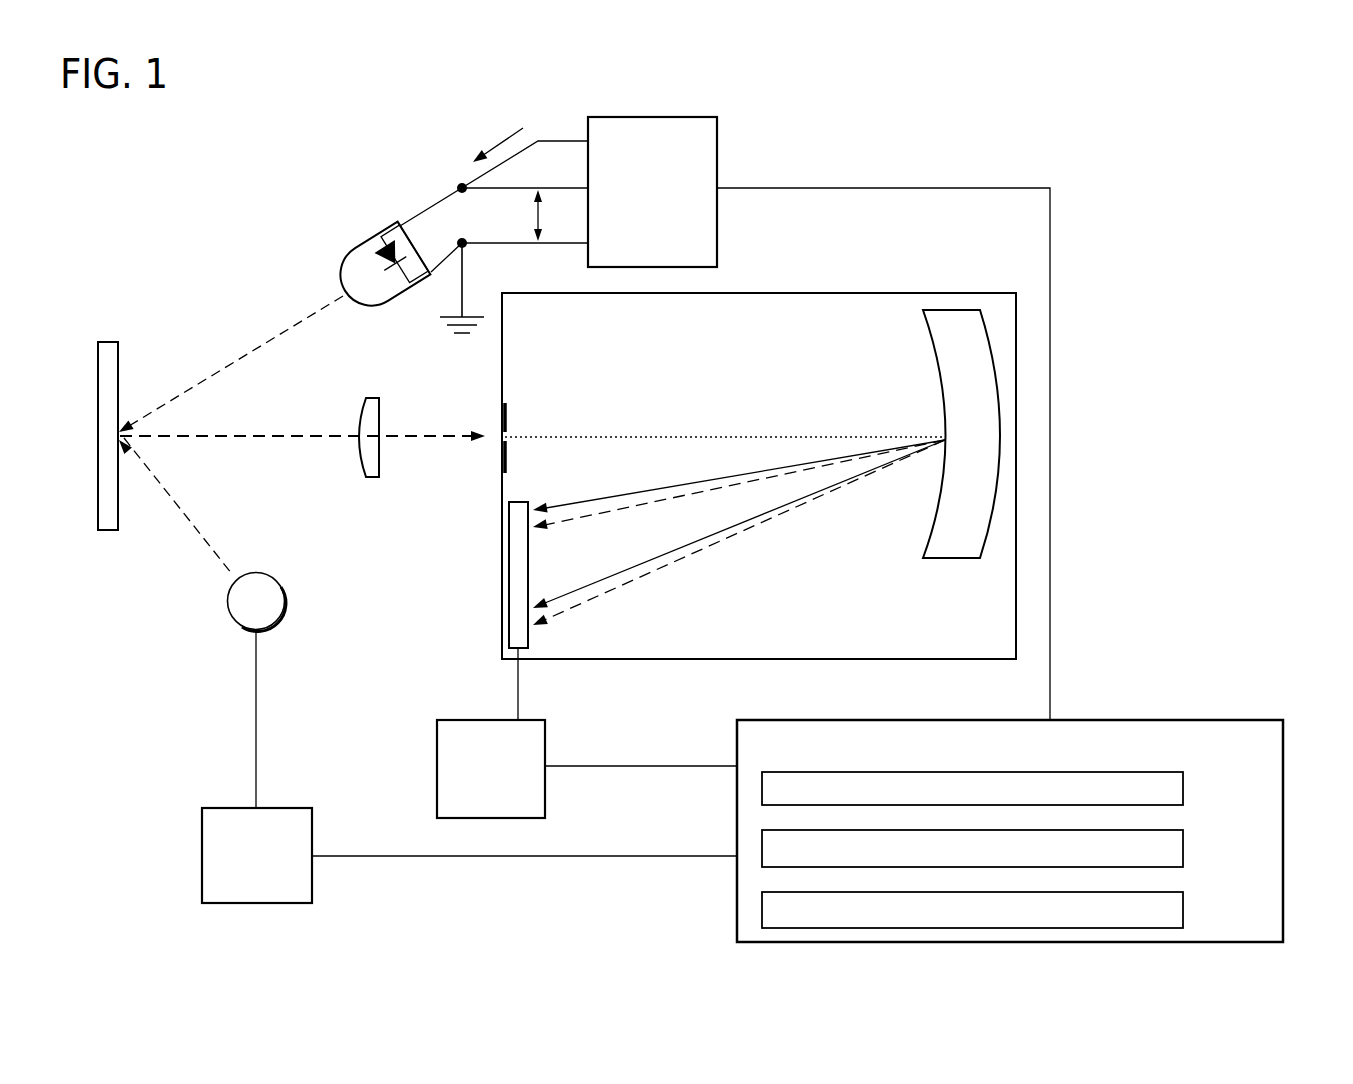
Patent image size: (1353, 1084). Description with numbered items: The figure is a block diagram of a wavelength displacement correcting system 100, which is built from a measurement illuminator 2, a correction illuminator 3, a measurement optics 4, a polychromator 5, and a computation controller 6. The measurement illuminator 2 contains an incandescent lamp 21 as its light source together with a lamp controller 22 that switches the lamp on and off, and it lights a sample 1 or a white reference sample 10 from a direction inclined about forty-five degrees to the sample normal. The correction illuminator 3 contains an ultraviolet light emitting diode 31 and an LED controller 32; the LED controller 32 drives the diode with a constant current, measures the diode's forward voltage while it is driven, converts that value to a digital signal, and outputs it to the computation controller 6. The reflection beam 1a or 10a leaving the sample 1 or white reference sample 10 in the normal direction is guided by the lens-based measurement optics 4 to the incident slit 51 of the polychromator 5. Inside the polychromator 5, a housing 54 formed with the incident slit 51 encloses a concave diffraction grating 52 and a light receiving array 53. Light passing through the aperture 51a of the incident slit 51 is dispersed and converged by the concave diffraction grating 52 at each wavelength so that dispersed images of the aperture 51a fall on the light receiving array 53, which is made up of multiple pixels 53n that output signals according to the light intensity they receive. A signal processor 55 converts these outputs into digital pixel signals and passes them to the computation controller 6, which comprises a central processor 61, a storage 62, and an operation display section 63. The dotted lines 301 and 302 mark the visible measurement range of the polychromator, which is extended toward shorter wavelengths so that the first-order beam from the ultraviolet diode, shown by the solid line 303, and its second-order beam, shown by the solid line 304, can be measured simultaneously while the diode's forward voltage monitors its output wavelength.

The sample 1 is at (127, 404).
The white reference sample 10 is at (105, 342).
The reflection beam 1a is at (302, 476).
The reflection beam 10a is at (262, 443).
The measurement illuminator 2 is at (200, 680).
The incandescent lamp 21 is at (284, 612).
The lamp controller 22 is at (271, 870).
The correction illuminator 3 is at (416, 150).
The ultraviolet light emitting diode 31 is at (363, 243).
The LED controller 32 is at (667, 204).
The measurement optics 4 is at (372, 398).
The polychromator 5 is at (818, 282).
The incident slit 51 is at (508, 417).
The aperture 51a is at (516, 433).
The concave diffraction grating 52 is at (937, 362).
The light receiving array 53 is at (451, 575).
The pixels 53n is at (509, 553).
The housing 54 is at (677, 660).
The signal processor 55 is at (506, 782).
The computation controller 6 is at (1283, 752).
The central processor 61 is at (1183, 785).
The storage 62 is at (1183, 845).
The operation display section 63 is at (1183, 905).
The wavelength displacement correcting system 100 is at (1082, 406).
The dotted line 301 is at (605, 515).
The dotted line 302 is at (614, 590).
The solid line 303 is at (623, 495).
The solid line 304 is at (578, 592).